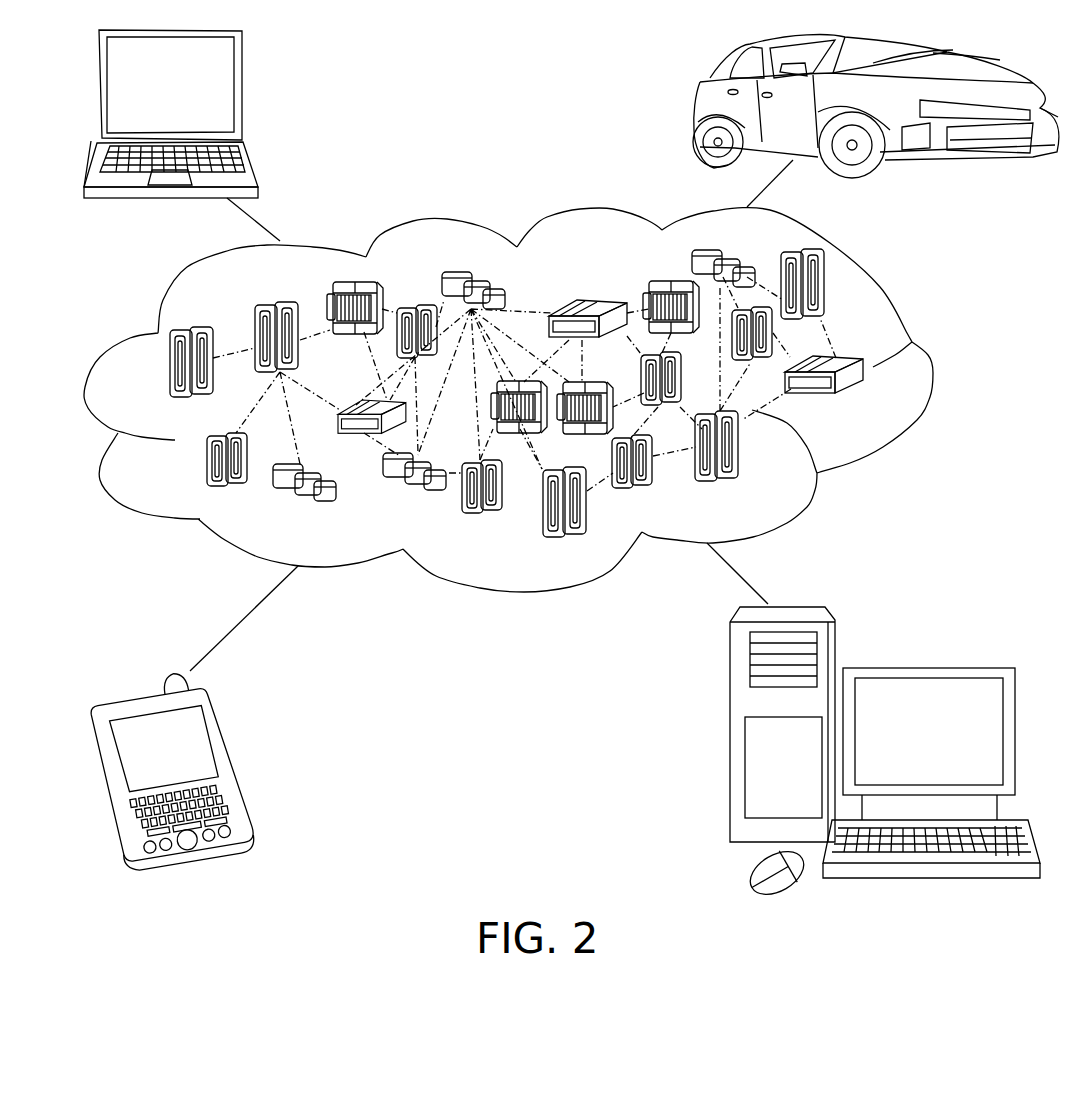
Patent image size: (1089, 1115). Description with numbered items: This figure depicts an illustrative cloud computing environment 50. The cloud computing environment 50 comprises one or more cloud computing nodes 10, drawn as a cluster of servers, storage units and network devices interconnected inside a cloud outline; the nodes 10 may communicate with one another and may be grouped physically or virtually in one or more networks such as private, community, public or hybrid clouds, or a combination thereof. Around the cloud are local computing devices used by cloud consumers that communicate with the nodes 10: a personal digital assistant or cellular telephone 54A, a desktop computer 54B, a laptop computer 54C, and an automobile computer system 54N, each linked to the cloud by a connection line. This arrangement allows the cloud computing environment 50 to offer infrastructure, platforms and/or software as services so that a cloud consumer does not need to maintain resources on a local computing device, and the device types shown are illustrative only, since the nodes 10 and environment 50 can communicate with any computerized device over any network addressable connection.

The cloud computing node 10 is at (878, 402).
The cloud computing environment 50 is at (927, 370).
The personal digital assistant or cellular telephone 54A is at (230, 760).
The desktop computer 54B is at (925, 668).
The laptop computer 54C is at (242, 90).
The automobile computer system 54N is at (698, 110).